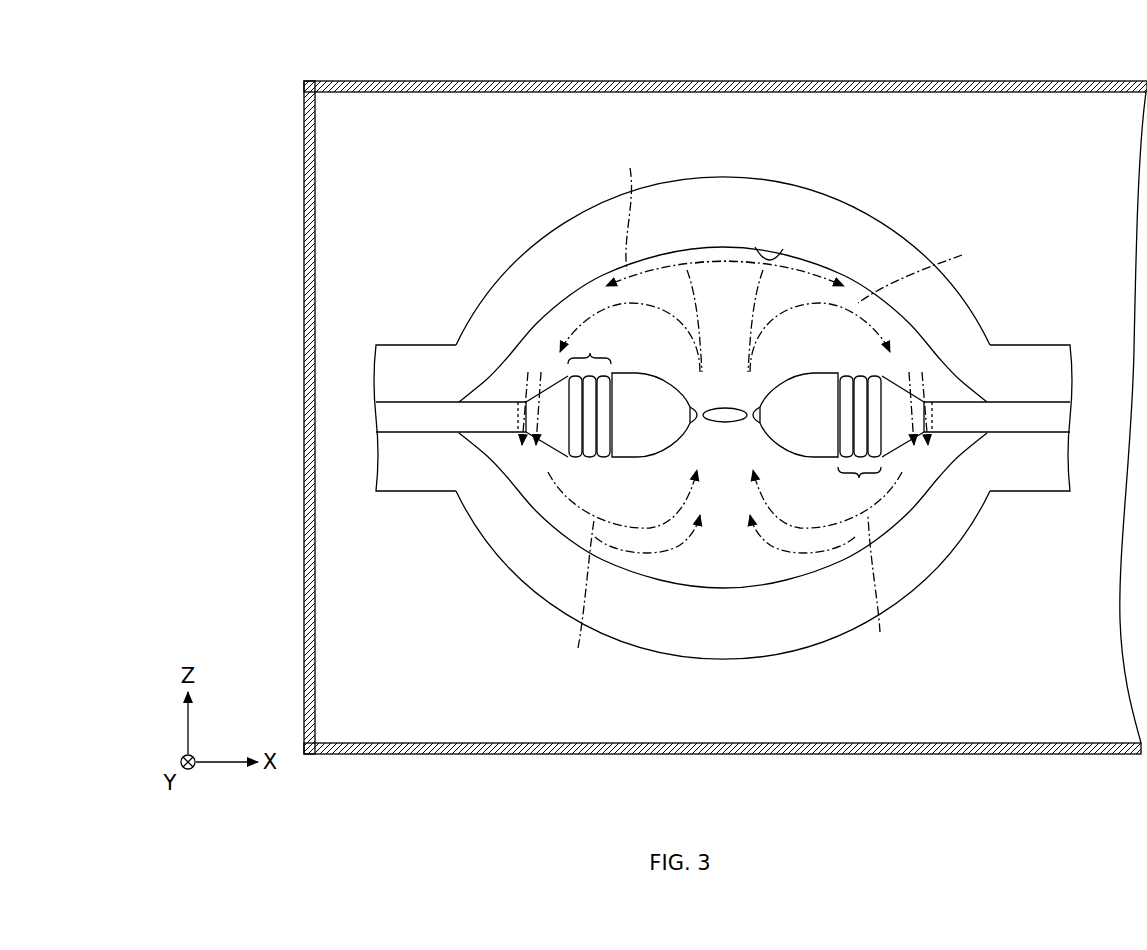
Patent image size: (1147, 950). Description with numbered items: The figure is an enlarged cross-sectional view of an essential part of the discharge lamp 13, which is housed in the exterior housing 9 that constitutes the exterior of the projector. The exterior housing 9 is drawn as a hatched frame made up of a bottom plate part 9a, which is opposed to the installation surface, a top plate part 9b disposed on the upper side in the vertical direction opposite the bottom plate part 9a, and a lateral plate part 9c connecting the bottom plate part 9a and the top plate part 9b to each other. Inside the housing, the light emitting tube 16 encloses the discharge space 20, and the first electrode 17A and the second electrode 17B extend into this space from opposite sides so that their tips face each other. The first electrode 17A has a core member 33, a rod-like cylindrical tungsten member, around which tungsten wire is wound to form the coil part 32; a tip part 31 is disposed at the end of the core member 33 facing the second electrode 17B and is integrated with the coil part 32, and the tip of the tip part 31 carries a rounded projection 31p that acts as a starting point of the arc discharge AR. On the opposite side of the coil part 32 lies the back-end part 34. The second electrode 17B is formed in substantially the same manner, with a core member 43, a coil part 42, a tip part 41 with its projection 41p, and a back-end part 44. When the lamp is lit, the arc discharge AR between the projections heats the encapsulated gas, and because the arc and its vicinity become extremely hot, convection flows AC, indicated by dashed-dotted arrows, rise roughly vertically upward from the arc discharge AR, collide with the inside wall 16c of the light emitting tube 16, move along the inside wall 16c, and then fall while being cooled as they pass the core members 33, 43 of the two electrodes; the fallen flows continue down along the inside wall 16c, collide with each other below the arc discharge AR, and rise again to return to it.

The exterior housing 9 is at (671, 423).
The bottom plate part 9a is at (483, 755).
The top plate part 9b is at (433, 81).
The lateral plate part 9c is at (304, 318).
The discharge lamp 13 is at (932, 180).
The light emitting tube 16 is at (778, 190).
The inside wall 16c is at (778, 262).
The first electrode 17A is at (478, 462).
The second electrode 17B is at (990, 378).
The discharge space 20 is at (716, 573).
The tip part 31 is at (652, 393).
The projection 31p is at (707, 400).
The coil part 32 is at (590, 352).
The core member 33 is at (476, 418).
The back-end part 34 is at (550, 395).
The tip part 41 is at (797, 445).
The projection 41p is at (757, 432).
The coil part 42 is at (859, 478).
The core member 43 is at (963, 435).
The back-end part 44 is at (892, 440).
The arc discharge AR is at (725, 451).
The convection flows AC is at (753, 408).